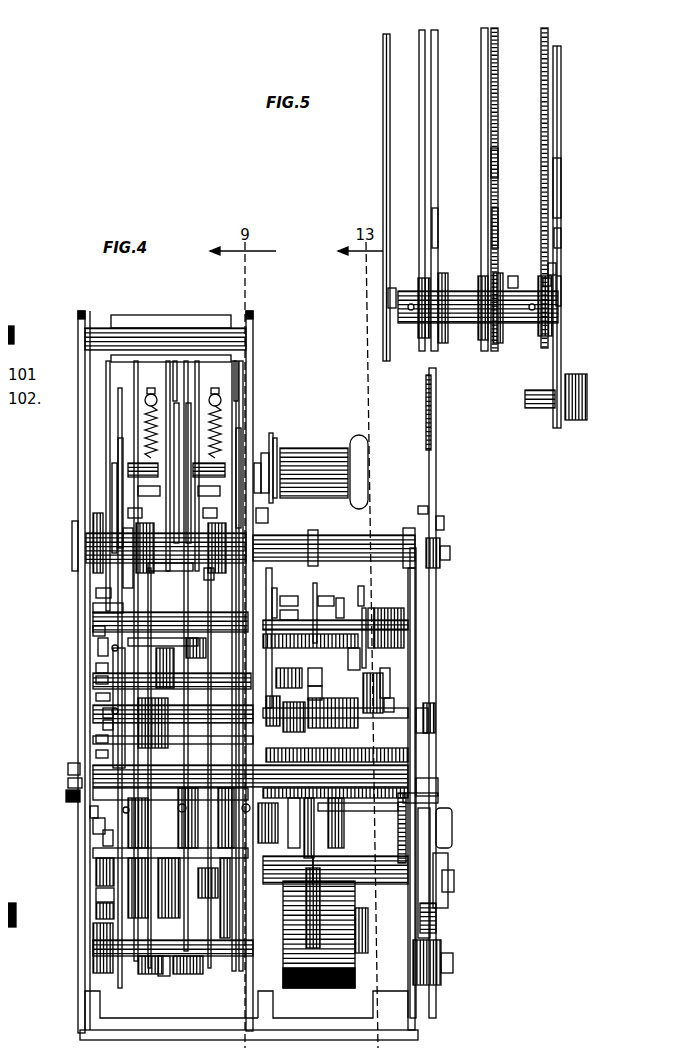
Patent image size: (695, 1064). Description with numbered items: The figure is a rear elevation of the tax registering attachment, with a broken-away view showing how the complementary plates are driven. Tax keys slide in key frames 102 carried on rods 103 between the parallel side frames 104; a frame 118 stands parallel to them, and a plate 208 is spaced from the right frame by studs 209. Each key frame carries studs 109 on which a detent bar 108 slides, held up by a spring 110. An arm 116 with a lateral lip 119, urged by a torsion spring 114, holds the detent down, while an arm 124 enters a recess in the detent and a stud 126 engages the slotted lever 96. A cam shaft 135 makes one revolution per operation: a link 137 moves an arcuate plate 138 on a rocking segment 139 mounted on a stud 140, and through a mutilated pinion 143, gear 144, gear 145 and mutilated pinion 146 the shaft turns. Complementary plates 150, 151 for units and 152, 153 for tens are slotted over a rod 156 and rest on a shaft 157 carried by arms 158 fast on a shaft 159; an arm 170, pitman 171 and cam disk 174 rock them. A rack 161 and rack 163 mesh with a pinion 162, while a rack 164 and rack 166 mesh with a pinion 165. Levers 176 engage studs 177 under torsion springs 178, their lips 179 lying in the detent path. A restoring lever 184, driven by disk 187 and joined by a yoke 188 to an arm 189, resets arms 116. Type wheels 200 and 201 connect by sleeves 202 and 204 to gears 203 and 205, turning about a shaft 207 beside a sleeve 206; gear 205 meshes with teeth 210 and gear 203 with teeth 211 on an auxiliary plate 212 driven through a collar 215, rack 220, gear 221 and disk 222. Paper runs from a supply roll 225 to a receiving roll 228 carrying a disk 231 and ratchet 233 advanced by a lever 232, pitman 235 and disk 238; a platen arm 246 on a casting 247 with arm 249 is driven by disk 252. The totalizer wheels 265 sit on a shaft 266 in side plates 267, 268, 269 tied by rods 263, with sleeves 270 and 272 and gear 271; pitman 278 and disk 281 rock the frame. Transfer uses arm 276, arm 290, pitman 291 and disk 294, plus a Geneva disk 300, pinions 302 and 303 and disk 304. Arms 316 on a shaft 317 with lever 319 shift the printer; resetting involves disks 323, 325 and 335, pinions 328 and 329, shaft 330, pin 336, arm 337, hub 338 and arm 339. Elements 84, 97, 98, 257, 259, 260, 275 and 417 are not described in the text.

In FIG. 4, the bracket 84 is at (428, 518).
In FIG. 4, the lever 96 is at (428, 465).
In FIG. 4, the gear 97 is at (442, 545).
In FIG. 4, the stud 98 is at (414, 496).
In FIG. 4, the key frame 102 is at (150, 305).
In FIG. 4, the rod 103 is at (85, 325).
In FIG. 5, the side frame 104 is at (380, 140).
In FIG. 4, the side frame 104 is at (70, 305).
In FIG. 4, the detent bar 108 is at (165, 382).
In FIG. 4, the stud 109 is at (165, 362).
In FIG. 4, the spring 110 is at (205, 418).
In FIG. 4, the torsion spring 114 is at (278, 823).
In FIG. 4, the arm 116 is at (85, 818).
In FIG. 4, the frame 118 is at (408, 982).
In FIG. 4, the lateral lip 119 is at (216, 884).
In FIG. 4, the arm 124 is at (60, 787).
In FIG. 4, the stud 126 is at (430, 695).
In FIG. 4, the cam shaft 135 is at (380, 868).
In FIG. 4, the link 137 is at (440, 855).
In FIG. 4, the arcuate plate 138 is at (445, 873).
In FIG. 4, the rocking segment 139 is at (430, 920).
In FIG. 4, the stud 140 is at (445, 952).
In FIG. 4, the mutilated pinion 143 is at (442, 835).
In FIG. 4, the gear 144 is at (430, 905).
In FIG. 4, the gear 145 is at (430, 790).
In FIG. 4, the mutilated pinion 146 is at (425, 778).
In FIG. 5, the plate 150 is at (413, 70).
In FIG. 4, the plate 150 is at (108, 458).
In FIG. 5, the plate 151 is at (426, 72).
In FIG. 4, the plate 151 is at (112, 438).
In FIG. 5, the plate 152 is at (473, 108).
In FIG. 4, the plate 152 is at (168, 398).
In FIG. 5, the plate 153 is at (485, 165).
In FIG. 4, the plate 153 is at (180, 398).
In FIG. 4, the rod 156 is at (200, 565).
In FIG. 5, the shaft 157 is at (553, 272).
In FIG. 5, the arm 158 is at (388, 280).
In FIG. 4, the arm 158 is at (85, 929).
In FIG. 5, the shaft 159 is at (522, 402).
In FIG. 4, the shaft 159 is at (175, 962).
In FIG. 5, the rack 161 is at (425, 335).
In FIG. 5, the pinion 162 is at (438, 272).
In FIG. 5, the rack 163 is at (430, 218).
In FIG. 5, the rack 164 is at (485, 340).
In FIG. 5, the pinion 165 is at (505, 268).
In FIG. 4, the pinion 165 is at (95, 830).
In FIG. 5, the rack 166 is at (492, 218).
In FIG. 4, the arm 170 is at (150, 965).
In FIG. 4, the pitman 171 is at (95, 886).
In FIG. 4, the disk 174 is at (160, 890).
In FIG. 4, the lever 176 is at (135, 486).
In FIG. 4, the stud 177 is at (180, 463).
In FIG. 4, the torsion spring 178 is at (200, 505).
In FIG. 4, the lip 179 is at (180, 562).
In FIG. 4, the restoring lever 184 is at (293, 828).
In FIG. 4, the disk 187 is at (190, 952).
In FIG. 4, the yoke 188 is at (150, 742).
In FIG. 4, the arm 189 is at (80, 803).
In FIG. 4, the type wheel 200 is at (295, 592).
In FIG. 4, the type wheel 201 is at (295, 606).
In FIG. 4, the sleeve 202 is at (292, 667).
In FIG. 4, the gear 203 is at (232, 645).
In FIG. 4, the sleeve 204 is at (185, 668).
In FIG. 4, the gear 205 is at (160, 636).
In FIG. 4, the sleeve 206 is at (74, 607).
In FIG. 4, the shaft 207 is at (82, 621).
In FIG. 4, the plate 208 is at (405, 600).
In FIG. 4, the stud 209 is at (375, 525).
In FIG. 5, the teeth 210 is at (487, 70).
In FIG. 4, the teeth 210 is at (180, 578).
In FIG. 5, the teeth 211 is at (533, 100).
In FIG. 4, the teeth 211 is at (245, 528).
In FIG. 5, the auxiliary plate 212 is at (548, 180).
In FIG. 4, the auxiliary plate 212 is at (230, 420).
In FIG. 5, the rotatable collar 215 is at (535, 330).
In FIG. 5, the rack 220 is at (552, 228).
In FIG. 5, the gear 221 is at (550, 262).
In FIG. 5, the disk 222 is at (536, 272).
In FIG. 4, the supply roll 225 is at (312, 985).
In FIG. 4, the receiving roll 228 is at (318, 450).
In FIG. 4, the disk 231 is at (268, 430).
In FIG. 4, the lever 232 is at (263, 425).
In FIG. 4, the ratchet 233 is at (272, 445).
In FIG. 4, the pitman 235 is at (255, 508).
In FIG. 4, the disk 238 is at (240, 915).
In FIG. 4, the arm 246 is at (335, 611).
In FIG. 4, the casting 247 is at (358, 815).
In FIG. 4, the arm 249 is at (310, 828).
In FIG. 4, the disk 252 is at (360, 921).
In FIG. 4, the cam 257 is at (333, 590).
In FIG. 4, the lever 259 is at (265, 585).
In FIG. 4, the plate 260 is at (286, 630).
In FIG. 4, the rod 263 is at (100, 582).
In FIG. 4, the totalizer wheel 265 is at (352, 612).
In FIG. 4, the shaft 266 is at (95, 717).
In FIG. 4, the side plate 267 is at (360, 605).
In FIG. 4, the side plate 268 is at (170, 622).
In FIG. 4, the side plate 269 is at (90, 672).
In FIG. 4, the sleeve 270 is at (173, 723).
In FIG. 4, the gear 271 is at (157, 660).
In FIG. 4, the sleeve 272 is at (268, 690).
In FIG. 4, the shaft 275 is at (173, 702).
In FIG. 4, the arm 276 is at (308, 580).
In FIG. 4, the pitman 278 is at (90, 731).
In FIG. 4, the disk 281 is at (95, 868).
In FIG. 4, the arm 290 is at (90, 637).
In FIG. 4, the pitman 291 is at (70, 760).
In FIG. 4, the disk 294 is at (95, 902).
In FIG. 4, the disk 300 is at (360, 672).
In FIG. 4, the pinion 302 is at (305, 662).
In FIG. 4, the pinion 303 is at (308, 676).
In FIG. 4, the disk 304 is at (355, 625).
In FIG. 4, the arm 316 is at (305, 742).
In FIG. 4, the shaft 317 is at (392, 795).
In FIG. 4, the manually operable lever 319 is at (66, 512).
In FIG. 4, the disk 323 is at (95, 705).
In FIG. 4, the disk 325 is at (380, 668).
In FIG. 4, the pinion 328 is at (90, 690).
In FIG. 4, the pinion 329 is at (75, 775).
In FIG. 4, the shaft 330 is at (90, 746).
In FIG. 4, the disk 335 is at (370, 620).
In FIG. 4, the pin 336 is at (383, 690).
In FIG. 4, the arm 337 is at (356, 600).
In FIG. 4, the hub 338 is at (352, 580).
In FIG. 4, the arm 339 is at (328, 592).
In FIG. 4, the shaft 417 is at (334, 859).